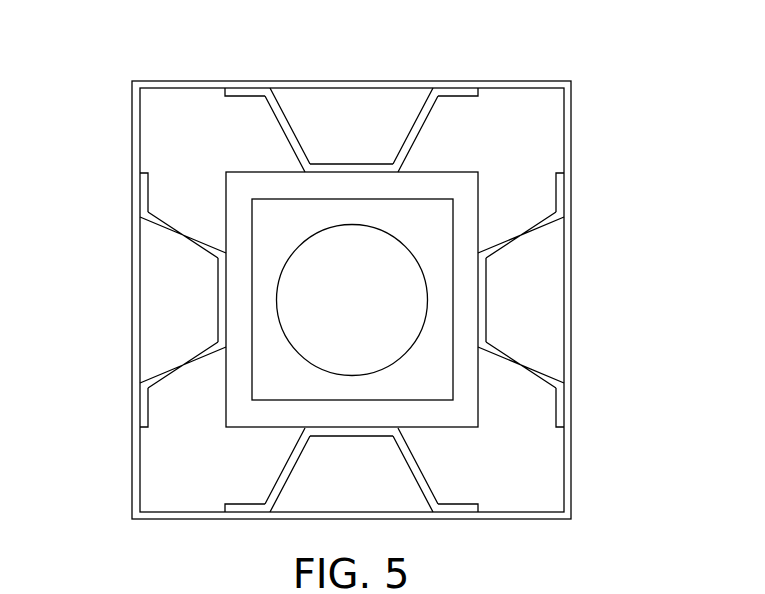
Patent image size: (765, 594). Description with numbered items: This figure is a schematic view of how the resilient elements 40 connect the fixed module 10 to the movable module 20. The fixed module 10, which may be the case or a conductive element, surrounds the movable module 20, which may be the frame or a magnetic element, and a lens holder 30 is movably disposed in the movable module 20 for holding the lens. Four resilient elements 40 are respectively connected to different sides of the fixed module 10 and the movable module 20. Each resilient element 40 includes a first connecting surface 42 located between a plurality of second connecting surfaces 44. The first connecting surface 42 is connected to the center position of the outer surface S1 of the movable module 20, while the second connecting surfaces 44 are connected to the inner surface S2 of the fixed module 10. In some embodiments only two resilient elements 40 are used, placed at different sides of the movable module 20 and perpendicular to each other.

The fixed module 10 is at (571, 118).
The movable module 20 is at (465, 288).
The lens holder 30 is at (427, 228).
The resilient element 40 is at (287, 128).
The first connecting surface 42 is at (220, 303).
The second connecting surface 44 is at (140, 196).
The outer surface S1 is at (226, 193).
The inner surface S2 is at (142, 463).